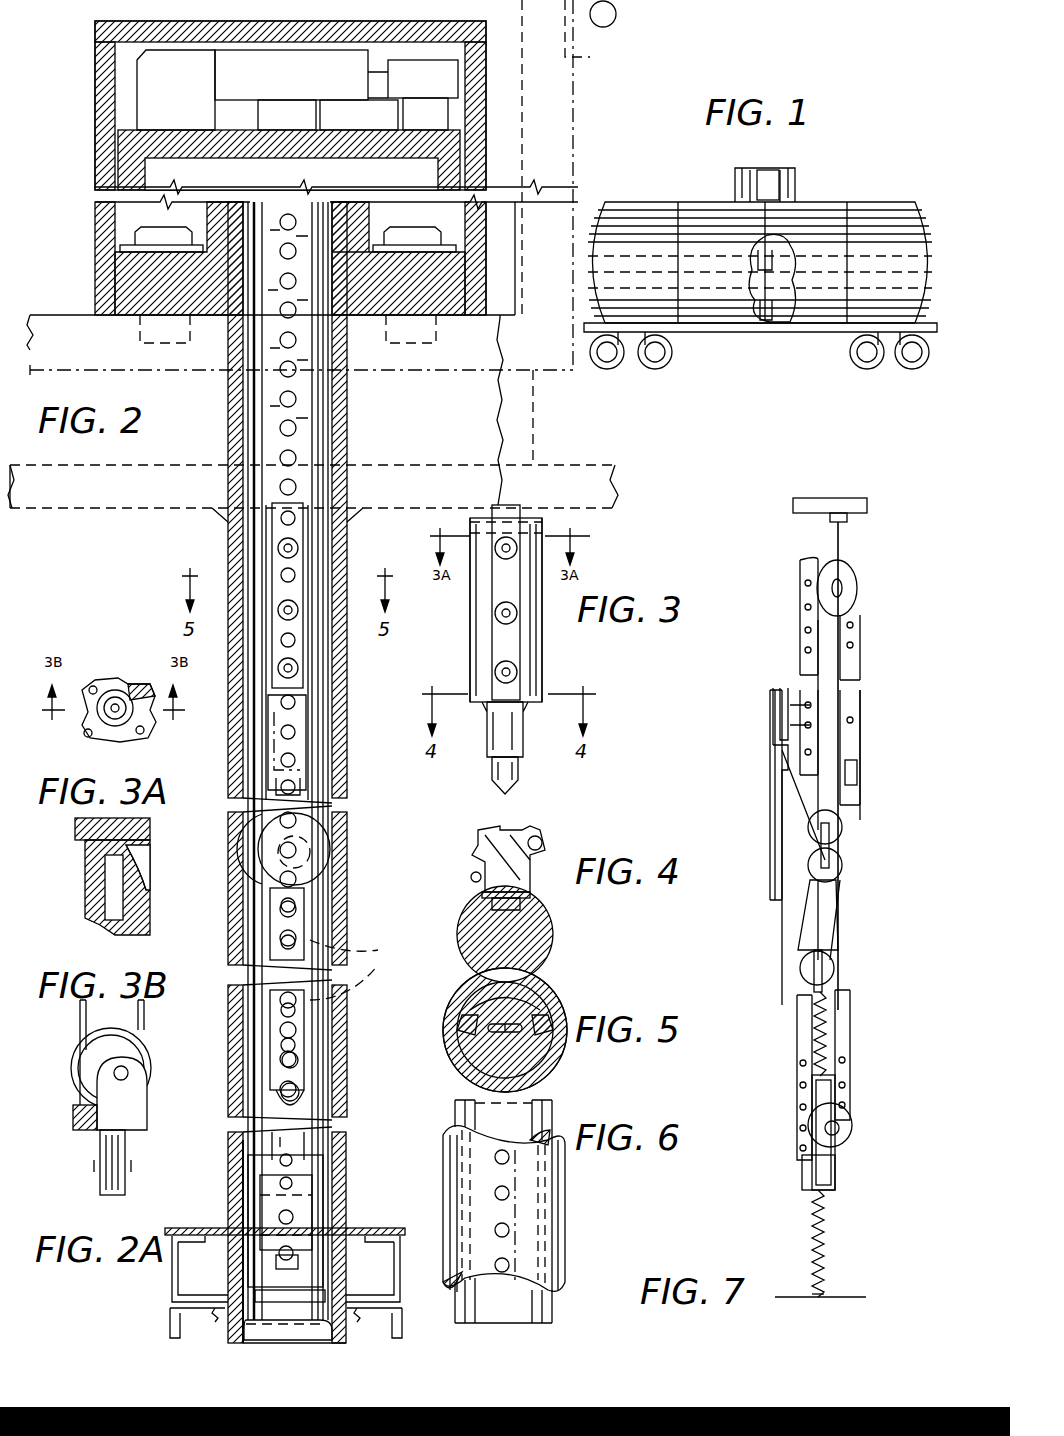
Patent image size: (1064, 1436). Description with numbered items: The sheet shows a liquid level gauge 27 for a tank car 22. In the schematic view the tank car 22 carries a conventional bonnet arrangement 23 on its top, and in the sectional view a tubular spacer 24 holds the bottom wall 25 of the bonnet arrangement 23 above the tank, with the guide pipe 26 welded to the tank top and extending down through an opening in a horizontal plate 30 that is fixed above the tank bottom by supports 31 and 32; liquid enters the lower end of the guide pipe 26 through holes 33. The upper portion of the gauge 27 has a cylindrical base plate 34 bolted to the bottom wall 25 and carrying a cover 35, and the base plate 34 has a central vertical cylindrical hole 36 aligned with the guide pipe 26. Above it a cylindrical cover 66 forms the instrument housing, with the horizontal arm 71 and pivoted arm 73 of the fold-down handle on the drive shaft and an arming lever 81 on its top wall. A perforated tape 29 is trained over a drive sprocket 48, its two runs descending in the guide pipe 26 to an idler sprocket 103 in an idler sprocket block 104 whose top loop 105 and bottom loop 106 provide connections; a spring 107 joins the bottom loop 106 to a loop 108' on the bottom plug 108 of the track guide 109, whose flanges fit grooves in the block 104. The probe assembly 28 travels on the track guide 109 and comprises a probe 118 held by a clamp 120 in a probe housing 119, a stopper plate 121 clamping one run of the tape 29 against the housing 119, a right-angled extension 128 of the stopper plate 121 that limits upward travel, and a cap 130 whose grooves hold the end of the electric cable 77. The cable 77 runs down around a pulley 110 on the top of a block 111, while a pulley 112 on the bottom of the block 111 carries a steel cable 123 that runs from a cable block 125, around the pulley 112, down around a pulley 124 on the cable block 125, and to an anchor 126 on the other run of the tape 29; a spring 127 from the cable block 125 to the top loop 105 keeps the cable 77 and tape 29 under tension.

In FIG. 2, the tank car 22 is at (618, 490).
In FIG. 1, the tank car 22 is at (838, 178).
In FIG. 2, the bonnet arrangement 23 is at (578, 125).
In FIG. 1, the bonnet arrangement 23 is at (715, 172).
In FIG. 2, the tubular spacer 24 is at (535, 420).
In FIG. 2, the bottom wall 25 is at (418, 370).
In FIG. 2, the guide pipe 26 is at (347, 880).
In FIG. 5, the guide pipe 26 is at (532, 980).
In FIG. 6, the guide pipe 26 is at (568, 1212).
In FIG. 2, the liquid level gauge 27 is at (68, 128).
In FIG. 1, the liquid level gauge 27 is at (760, 168).
In FIG. 2, the probe assembly 28 is at (287, 652).
In FIG. 3, the probe assembly 28 is at (584, 573).
In FIG. 7, the probe assembly 28 is at (780, 725).
In FIG. 1, the perforated tape 29 is at (758, 300).
In FIG. 4, the perforated tape 29 is at (490, 898).
In FIG. 7, the perforated tape 29 is at (800, 620).
In FIG. 2, the horizontal plate 30 is at (200, 1230).
In FIG. 2, the support 31 is at (172, 1272).
In FIG. 2, the support 32 is at (398, 1292).
In FIG. 2, the holes 33 is at (230, 1162).
In FIG. 2, the cylindrical base plate 34 is at (95, 305).
In FIG. 7, the cylindrical base plate 34 is at (822, 498).
In FIG. 2, the cover 35 is at (95, 215).
In FIG. 2, the central vertical cylindrical hole 36 is at (326, 252).
In FIG. 7, the drive sprocket 48 is at (858, 590).
In FIG. 2, the cylindrical cover 66 is at (207, 158).
In FIG. 2, the horizontal arm 71 is at (432, 87).
In FIG. 2, the arm 73 is at (320, 108).
In FIG. 2, the electric cable 77 is at (256, 549).
In FIG. 3A, the electric cable 77 is at (128, 685).
In FIG. 3B, the electric cable 77 is at (146, 872).
In FIG. 2A, the electric cable 77 is at (145, 1022).
In FIG. 4, the electric cable 77 is at (540, 838).
In FIG. 7, the electric cable 77 is at (845, 540).
In FIG. 2, the arming lever 81 is at (258, 103).
In FIG. 2, the idler sprocket 103 is at (280, 1217).
In FIG. 7, the idler sprocket 103 is at (850, 1115).
In FIG. 2, the idler sprocket block 104 is at (315, 1190).
In FIG. 7, the idler sprocket block 104 is at (835, 1075).
In FIG. 2, the top loop 105 is at (320, 1138).
In FIG. 7, the top loop 105 is at (812, 1072).
In FIG. 2, the bottom loop 106 is at (285, 1292).
In FIG. 7, the bottom loop 106 is at (825, 1195).
In FIG. 7, the spring 107 is at (825, 1232).
In FIG. 2, the bottom plug 108 is at (265, 1333).
In FIG. 5, the bottom plug 108 is at (506, 1044).
In FIG. 7, the bottom plug 108 is at (834, 1286).
In FIG. 2, the loop 108' is at (319, 1333).
In FIG. 5, the loop 108' is at (516, 1014).
In FIG. 7, the loop 108' is at (788, 1291).
In FIG. 2, the track guide 109 is at (335, 422).
In FIG. 5, the track guide 109 is at (490, 982).
In FIG. 6, the track guide 109 is at (553, 1310).
In FIG. 7, the track guide 109 is at (770, 780).
In FIG. 2, the pulley 110 is at (347, 820).
In FIG. 2A, the pulley 110 is at (148, 1054).
In FIG. 7, the pulley 110 is at (845, 835).
In FIG. 2A, the block 111 is at (147, 1100).
In FIG. 7, the block 111 is at (790, 905).
In FIG. 2, the pulley 112 is at (310, 912).
In FIG. 2A, the pulley 112 is at (102, 1180).
In FIG. 7, the pulley 112 is at (845, 885).
In FIG. 2, the probe 118 is at (318, 765).
In FIG. 3, the probe 118 is at (520, 768).
In FIG. 2, the probe housing 119 is at (310, 693).
In FIG. 3, the probe housing 119 is at (542, 660).
In FIG. 3A, the probe housing 119 is at (92, 680).
In FIG. 3B, the probe housing 119 is at (85, 877).
In FIG. 2, the clamp 120 is at (312, 731).
In FIG. 3, the clamp 120 is at (524, 730).
In FIG. 2, the stopper plate 121 is at (296, 635).
In FIG. 3, the stopper plate 121 is at (505, 585).
In FIG. 4, the stopper plate 121 is at (530, 897).
In FIG. 2, the steel cable 123 is at (359, 970).
In FIG. 7, the steel cable 123 is at (850, 855).
In FIG. 2, the pulley 124 is at (320, 1098).
In FIG. 7, the pulley 124 is at (836, 972).
In FIG. 2, the cable block 125 is at (310, 1032).
In FIG. 7, the cable block 125 is at (835, 945).
In FIG. 7, the anchor 126 is at (855, 770).
In FIG. 7, the spring 127 is at (825, 1015).
In FIG. 4, the right-angled extension 128 is at (510, 912).
In FIG. 3B, the cap 130 is at (146, 820).